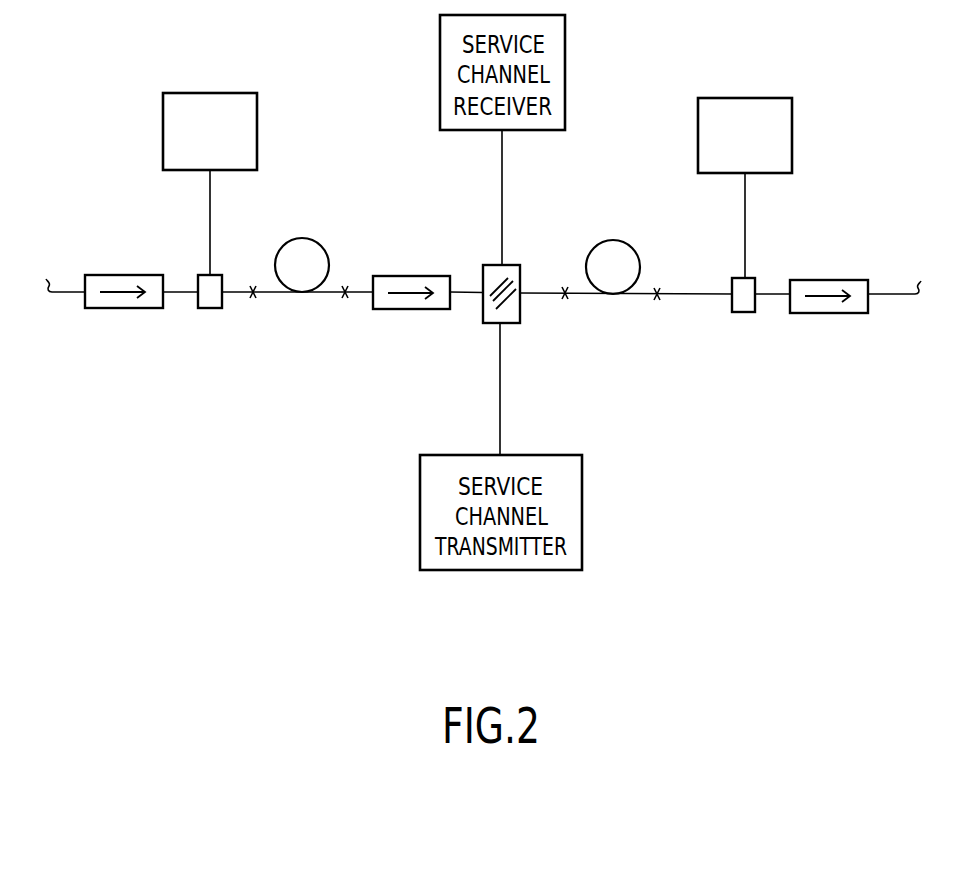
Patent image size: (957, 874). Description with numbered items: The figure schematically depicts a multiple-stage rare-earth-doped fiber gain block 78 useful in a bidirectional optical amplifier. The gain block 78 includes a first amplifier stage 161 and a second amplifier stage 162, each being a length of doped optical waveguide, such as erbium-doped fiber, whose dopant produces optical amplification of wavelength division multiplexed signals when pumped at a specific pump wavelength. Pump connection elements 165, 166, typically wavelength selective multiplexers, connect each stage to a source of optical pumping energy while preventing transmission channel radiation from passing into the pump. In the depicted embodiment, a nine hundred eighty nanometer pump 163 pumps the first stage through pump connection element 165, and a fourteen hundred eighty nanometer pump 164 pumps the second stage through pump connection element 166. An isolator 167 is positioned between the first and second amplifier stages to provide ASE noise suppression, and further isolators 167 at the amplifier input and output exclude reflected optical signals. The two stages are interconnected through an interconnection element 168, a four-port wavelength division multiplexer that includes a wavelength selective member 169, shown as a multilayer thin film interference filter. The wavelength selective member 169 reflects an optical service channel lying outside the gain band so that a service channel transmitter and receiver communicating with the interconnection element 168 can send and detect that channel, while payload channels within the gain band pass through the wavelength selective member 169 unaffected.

The gain block 78 is at (174, 502).
The first amplifier stage 161 is at (313, 242).
The second amplifier stage 162 is at (618, 242).
The 980 nm pump 163 is at (210, 93).
The 1480 nm pump 164 is at (742, 98).
The pump connection element 165 is at (197, 306).
The pump connection element 166 is at (731, 310).
The isolator 167 is at (120, 275).
The interconnection element 168 is at (507, 265).
The wavelength selective member 169 is at (487, 307).